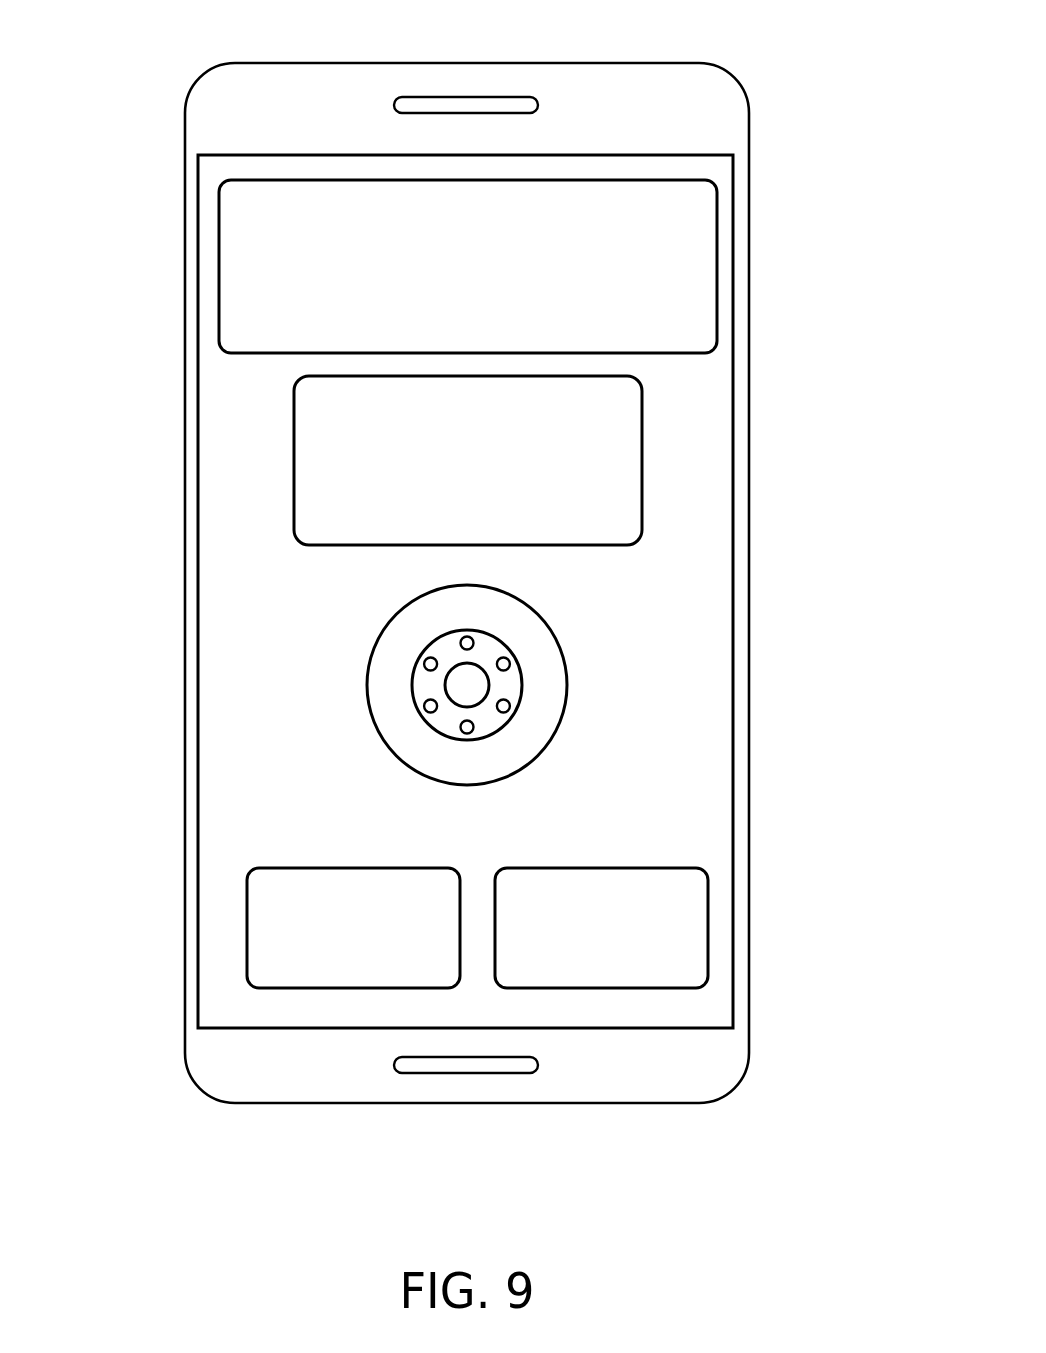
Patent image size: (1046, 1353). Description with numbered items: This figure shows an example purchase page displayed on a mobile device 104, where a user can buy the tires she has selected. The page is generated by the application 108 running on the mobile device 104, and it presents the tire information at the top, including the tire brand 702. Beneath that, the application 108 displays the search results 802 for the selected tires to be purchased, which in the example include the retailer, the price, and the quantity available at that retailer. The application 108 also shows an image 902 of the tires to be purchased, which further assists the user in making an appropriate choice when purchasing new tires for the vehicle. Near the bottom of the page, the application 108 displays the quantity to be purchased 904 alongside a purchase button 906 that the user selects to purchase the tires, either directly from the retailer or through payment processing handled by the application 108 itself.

The mobile device 104 is at (672, 95).
The application 108 is at (700, 512).
The tire brand 702 is at (313, 228).
The search results 802 is at (313, 430).
The image of the tires to be purchased 902 is at (390, 679).
The quantity to be purchased 904 is at (275, 938).
The purchase button 906 is at (685, 920).